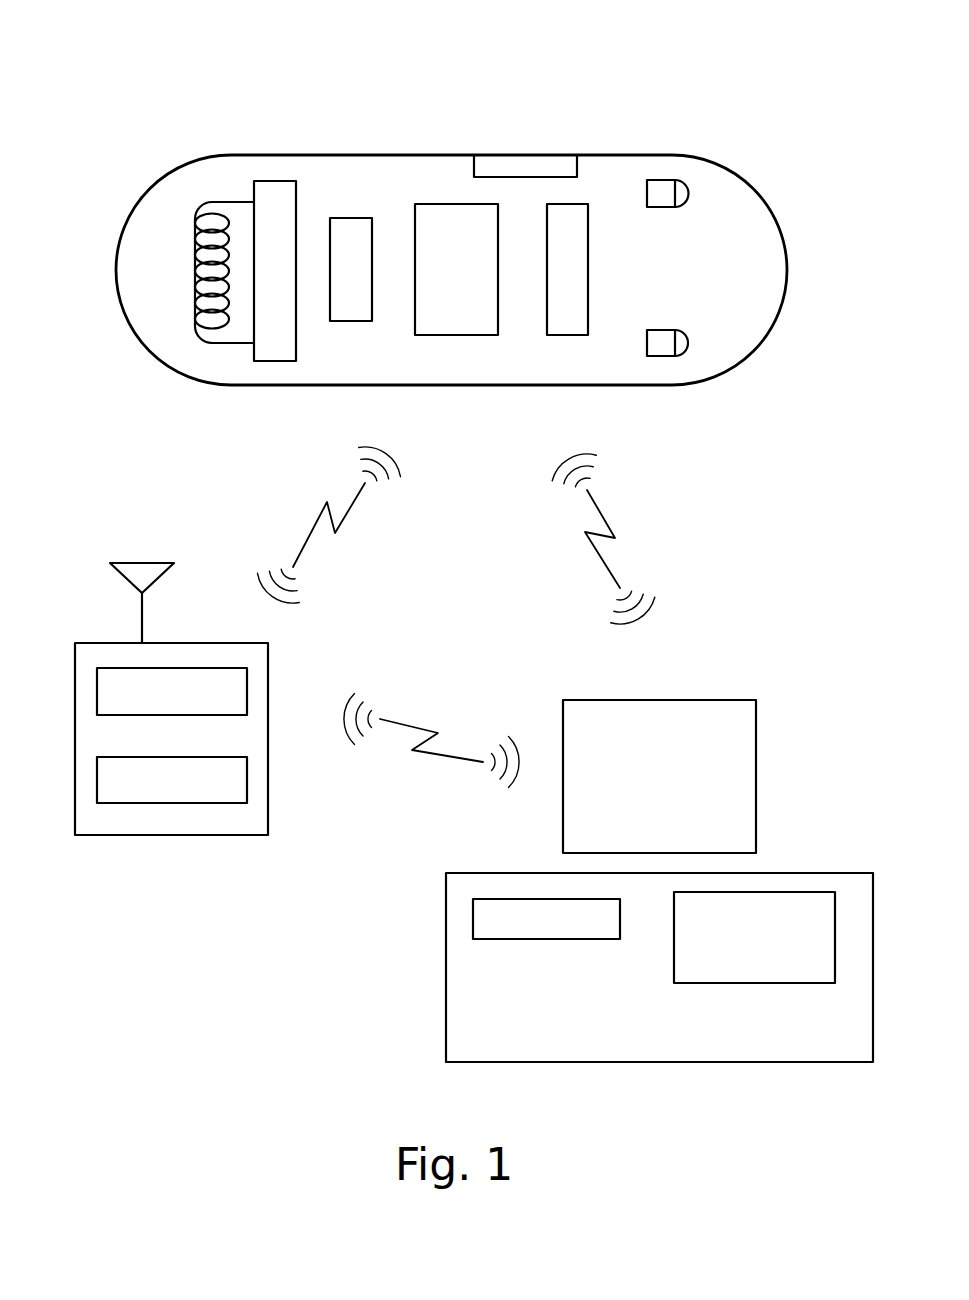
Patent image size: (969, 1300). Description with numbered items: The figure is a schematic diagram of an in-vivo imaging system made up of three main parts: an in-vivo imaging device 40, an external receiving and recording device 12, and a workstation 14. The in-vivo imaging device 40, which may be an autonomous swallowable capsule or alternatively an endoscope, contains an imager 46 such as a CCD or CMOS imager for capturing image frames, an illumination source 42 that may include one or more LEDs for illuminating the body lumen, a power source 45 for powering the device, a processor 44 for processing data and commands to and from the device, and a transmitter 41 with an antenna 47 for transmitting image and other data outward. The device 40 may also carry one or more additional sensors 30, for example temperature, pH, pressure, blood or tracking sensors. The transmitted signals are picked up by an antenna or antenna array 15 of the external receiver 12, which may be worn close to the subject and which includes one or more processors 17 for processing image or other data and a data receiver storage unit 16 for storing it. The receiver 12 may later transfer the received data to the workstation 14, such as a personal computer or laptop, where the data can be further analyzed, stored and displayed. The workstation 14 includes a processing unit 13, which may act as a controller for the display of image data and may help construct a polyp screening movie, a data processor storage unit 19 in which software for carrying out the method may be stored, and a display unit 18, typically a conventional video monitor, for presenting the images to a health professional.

The in-vivo imaging device 40 is at (288, 88).
The antenna 47 is at (217, 202).
The transmitter 41 is at (273, 361).
The processor 44 is at (352, 218).
The power source 45 is at (472, 335).
The imager 46 is at (567, 335).
The sensor 30 is at (531, 165).
The illumination source 42 is at (665, 180).
The external receiving device 12 is at (286, 670).
The antenna array 15 is at (158, 578).
The processor 17 is at (97, 691).
The data receiver storage unit 16 is at (247, 777).
The workstation 14 is at (795, 779).
The display unit 18 is at (633, 700).
The data processor storage unit 19 is at (557, 939).
The processing unit 13 is at (760, 983).